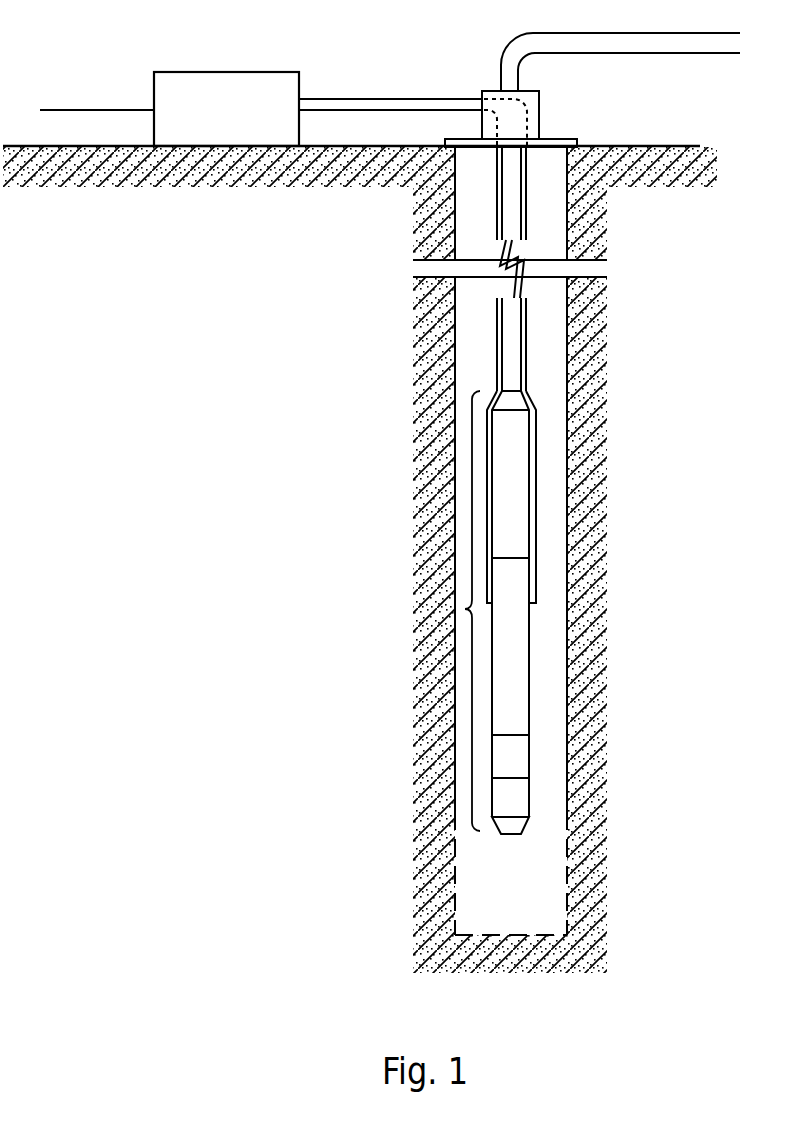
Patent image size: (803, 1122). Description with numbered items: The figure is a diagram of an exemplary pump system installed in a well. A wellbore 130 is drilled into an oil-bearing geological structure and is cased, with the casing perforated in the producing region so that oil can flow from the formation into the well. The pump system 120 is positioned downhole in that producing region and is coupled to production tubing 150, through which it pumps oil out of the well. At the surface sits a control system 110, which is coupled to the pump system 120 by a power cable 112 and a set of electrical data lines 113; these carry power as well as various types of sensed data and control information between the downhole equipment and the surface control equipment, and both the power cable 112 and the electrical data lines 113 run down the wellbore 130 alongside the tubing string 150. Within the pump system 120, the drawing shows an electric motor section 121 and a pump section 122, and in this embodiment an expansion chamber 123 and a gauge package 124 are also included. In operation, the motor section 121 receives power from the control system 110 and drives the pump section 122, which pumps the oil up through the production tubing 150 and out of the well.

The control system 110 is at (228, 72).
The power cable 112 is at (386, 106).
The electrical data lines 113 is at (438, 98).
The pump system 120 is at (519, 605).
The electric motor section 121 is at (530, 650).
The pump section 122 is at (531, 430).
The expansion chamber 123 is at (530, 760).
The gauge package 124 is at (530, 803).
The wellbore 130 is at (567, 521).
The production tubing 150 is at (521, 341).